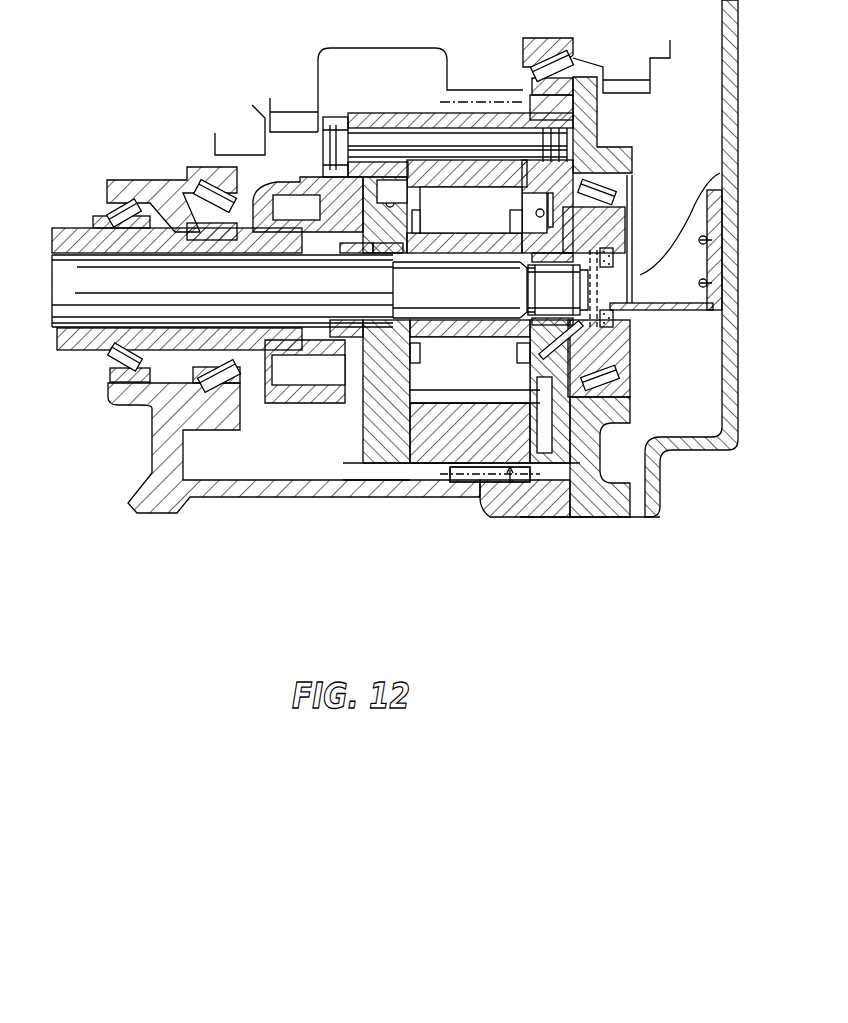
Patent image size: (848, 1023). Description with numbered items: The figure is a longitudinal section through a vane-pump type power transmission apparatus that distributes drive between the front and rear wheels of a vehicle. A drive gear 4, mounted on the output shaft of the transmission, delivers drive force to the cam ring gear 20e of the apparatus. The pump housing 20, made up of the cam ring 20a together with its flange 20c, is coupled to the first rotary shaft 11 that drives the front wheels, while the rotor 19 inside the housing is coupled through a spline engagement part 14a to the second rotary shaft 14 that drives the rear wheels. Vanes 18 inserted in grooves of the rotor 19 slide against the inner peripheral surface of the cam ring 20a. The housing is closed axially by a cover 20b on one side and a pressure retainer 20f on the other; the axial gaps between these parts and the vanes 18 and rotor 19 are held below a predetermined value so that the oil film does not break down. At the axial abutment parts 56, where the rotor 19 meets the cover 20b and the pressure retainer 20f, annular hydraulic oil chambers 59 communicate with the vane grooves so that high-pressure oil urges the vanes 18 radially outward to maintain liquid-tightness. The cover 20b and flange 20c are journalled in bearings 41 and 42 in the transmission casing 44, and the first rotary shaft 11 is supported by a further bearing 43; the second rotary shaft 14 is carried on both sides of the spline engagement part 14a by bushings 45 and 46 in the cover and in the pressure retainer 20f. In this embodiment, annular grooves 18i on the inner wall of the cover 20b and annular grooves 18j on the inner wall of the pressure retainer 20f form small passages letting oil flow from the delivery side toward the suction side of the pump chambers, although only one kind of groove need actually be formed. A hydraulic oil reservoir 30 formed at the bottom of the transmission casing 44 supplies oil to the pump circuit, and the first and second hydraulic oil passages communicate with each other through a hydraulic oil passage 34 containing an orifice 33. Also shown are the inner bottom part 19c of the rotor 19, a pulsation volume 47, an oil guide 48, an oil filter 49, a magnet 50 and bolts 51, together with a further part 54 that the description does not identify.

The drive gear 4 is at (462, 30).
The first rotary shaft 11 is at (73, 228).
The second rotary shaft 14 is at (132, 295).
The spline engagement part 14a is at (458, 250).
The vane 18 is at (453, 193).
The annular grooves 18i is at (527, 207).
The annular grooves 18j is at (405, 205).
The rotor 19 is at (437, 243).
The inner bottom part of the rotor 19c is at (547, 207).
The housing 20 is at (343, 480).
The cam ring 20a is at (463, 383).
The cover 20b is at (570, 517).
The flange 20c is at (373, 480).
The cam ring gear 20e is at (507, 95).
The pressure retainer 20f is at (383, 253).
The hydraulic oil reservoir 30 is at (718, 430).
The orifice 33 is at (503, 482).
The hydraulic oil passage 34 is at (490, 474).
The bearing 41 is at (600, 185).
The bearing 42 is at (215, 196).
The bearing 43 is at (110, 228).
The transmission casing 44 is at (180, 180).
The bushing 45 is at (562, 290).
The bushing 46 is at (353, 253).
The pulsation volume 47 is at (298, 205).
The oil guide 48 is at (692, 292).
The oil filter 49 is at (638, 247).
The magnet 50 is at (630, 325).
The bolts 51 is at (362, 140).
The oil seal 54 is at (575, 338).
The axial abutment part 56 is at (410, 377).
The hydraulic oil chambers 59 is at (416, 128).